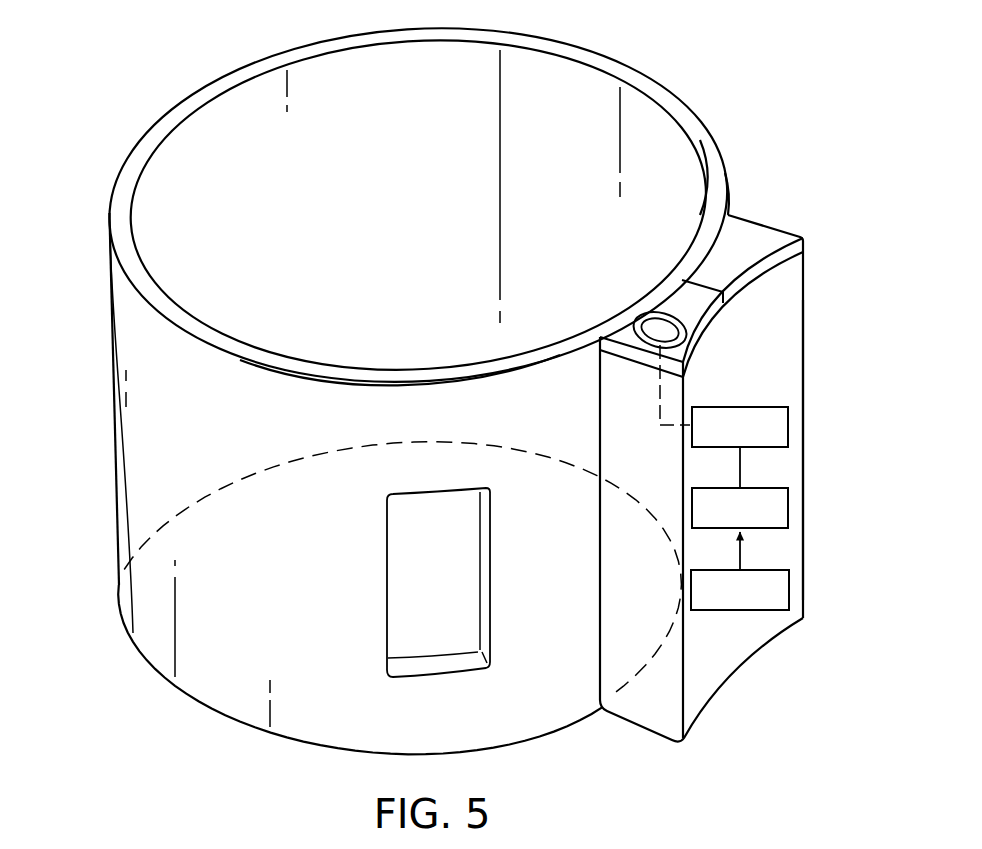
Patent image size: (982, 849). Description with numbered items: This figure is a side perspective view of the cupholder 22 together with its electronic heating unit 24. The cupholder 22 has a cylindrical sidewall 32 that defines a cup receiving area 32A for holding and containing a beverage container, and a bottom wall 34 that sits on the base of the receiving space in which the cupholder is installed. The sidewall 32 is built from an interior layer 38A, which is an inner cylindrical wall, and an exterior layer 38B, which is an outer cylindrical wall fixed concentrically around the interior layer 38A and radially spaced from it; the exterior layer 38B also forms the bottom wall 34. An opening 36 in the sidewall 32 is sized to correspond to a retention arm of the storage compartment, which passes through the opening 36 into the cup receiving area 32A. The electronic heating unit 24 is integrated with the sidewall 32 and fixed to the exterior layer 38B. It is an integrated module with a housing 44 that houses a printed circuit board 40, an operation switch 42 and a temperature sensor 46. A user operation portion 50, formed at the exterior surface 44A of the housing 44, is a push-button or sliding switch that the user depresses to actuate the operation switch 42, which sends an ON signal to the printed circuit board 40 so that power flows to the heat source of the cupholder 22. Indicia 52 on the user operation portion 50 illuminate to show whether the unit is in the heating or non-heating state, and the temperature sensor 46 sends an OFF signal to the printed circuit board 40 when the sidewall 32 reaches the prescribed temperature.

The cupholder 22 is at (649, 71).
The electronic heating unit 24 is at (808, 309).
The sidewall 32 is at (110, 365).
The cup receiving area 32A is at (250, 148).
The bottom wall 34 is at (163, 517).
The opening 36 is at (427, 665).
The interior layer 38A is at (660, 168).
The exterior layer 38B is at (725, 175).
The printed circuit board 40 is at (711, 487).
The operation switch 42 is at (765, 407).
The housing 44 is at (804, 472).
The exterior surface of housing 44A is at (672, 302).
The temperature sensor 46 is at (763, 610).
The user operation portion 50 is at (658, 314).
The indicia 52 is at (636, 325).